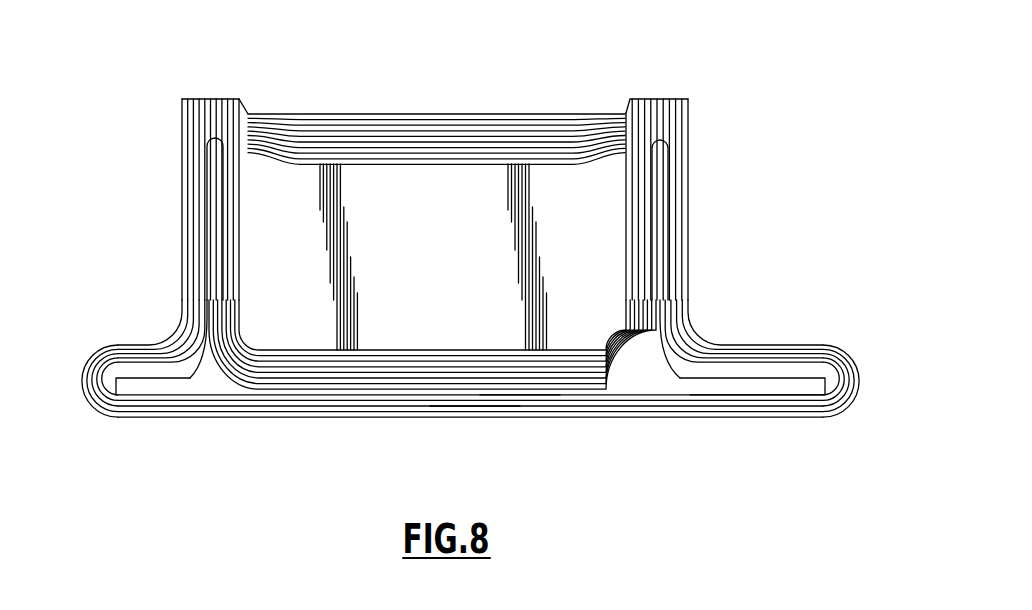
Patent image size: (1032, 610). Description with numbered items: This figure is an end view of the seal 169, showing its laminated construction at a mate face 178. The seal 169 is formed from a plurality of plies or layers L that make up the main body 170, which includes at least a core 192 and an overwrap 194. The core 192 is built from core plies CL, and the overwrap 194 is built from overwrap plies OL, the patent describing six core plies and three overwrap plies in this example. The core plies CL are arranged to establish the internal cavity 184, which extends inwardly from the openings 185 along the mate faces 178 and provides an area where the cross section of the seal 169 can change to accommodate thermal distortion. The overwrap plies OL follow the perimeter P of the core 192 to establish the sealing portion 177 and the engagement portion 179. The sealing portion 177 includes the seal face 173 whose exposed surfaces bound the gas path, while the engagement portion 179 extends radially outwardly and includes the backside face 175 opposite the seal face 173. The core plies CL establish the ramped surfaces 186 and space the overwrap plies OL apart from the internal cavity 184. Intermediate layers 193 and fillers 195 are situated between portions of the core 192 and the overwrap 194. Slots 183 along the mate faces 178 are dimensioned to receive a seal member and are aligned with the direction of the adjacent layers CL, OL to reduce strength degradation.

The seal 169 is at (177, 45).
The backside face 175 is at (432, 114).
The core plies CL is at (540, 157).
The ramped surfaces 186 is at (368, 163).
The internal cavity 184 is at (410, 260).
The main body 170 is at (690, 219).
The openings 185 is at (630, 181).
The layers L is at (690, 260).
The engagement portion 179 is at (690, 285).
The slots 183 is at (668, 308).
The mate faces 178 is at (835, 347).
The fillers 195 is at (92, 402).
The sealing portion 177 is at (858, 381).
The core 192 is at (365, 404).
The seal face 173 is at (561, 418).
The overwrap 194 is at (414, 430).
The intermediate layers 193 is at (667, 397).
The overwrap plies OL is at (494, 406).
The perimeter P is at (508, 394).